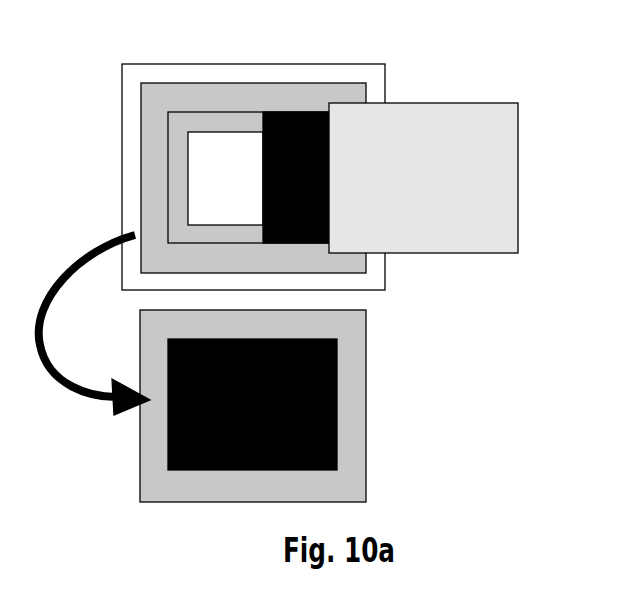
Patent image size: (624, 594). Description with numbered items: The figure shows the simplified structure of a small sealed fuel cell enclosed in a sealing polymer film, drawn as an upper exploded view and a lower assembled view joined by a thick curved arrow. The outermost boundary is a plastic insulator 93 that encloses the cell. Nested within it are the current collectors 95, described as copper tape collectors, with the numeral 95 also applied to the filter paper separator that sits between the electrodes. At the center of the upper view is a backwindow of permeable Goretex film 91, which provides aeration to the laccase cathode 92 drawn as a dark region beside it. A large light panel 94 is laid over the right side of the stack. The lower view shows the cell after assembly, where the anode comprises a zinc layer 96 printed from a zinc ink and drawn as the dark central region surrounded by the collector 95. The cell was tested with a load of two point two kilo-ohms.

The backwindow of permeable Goretex film 91 is at (215, 170).
The laccase cathode 92 is at (252, 216).
The plastic insulator 93 is at (389, 74).
The overlay panel 94 is at (412, 225).
The current collectors 95 is at (356, 270).
The zinc layer 96 is at (349, 433).